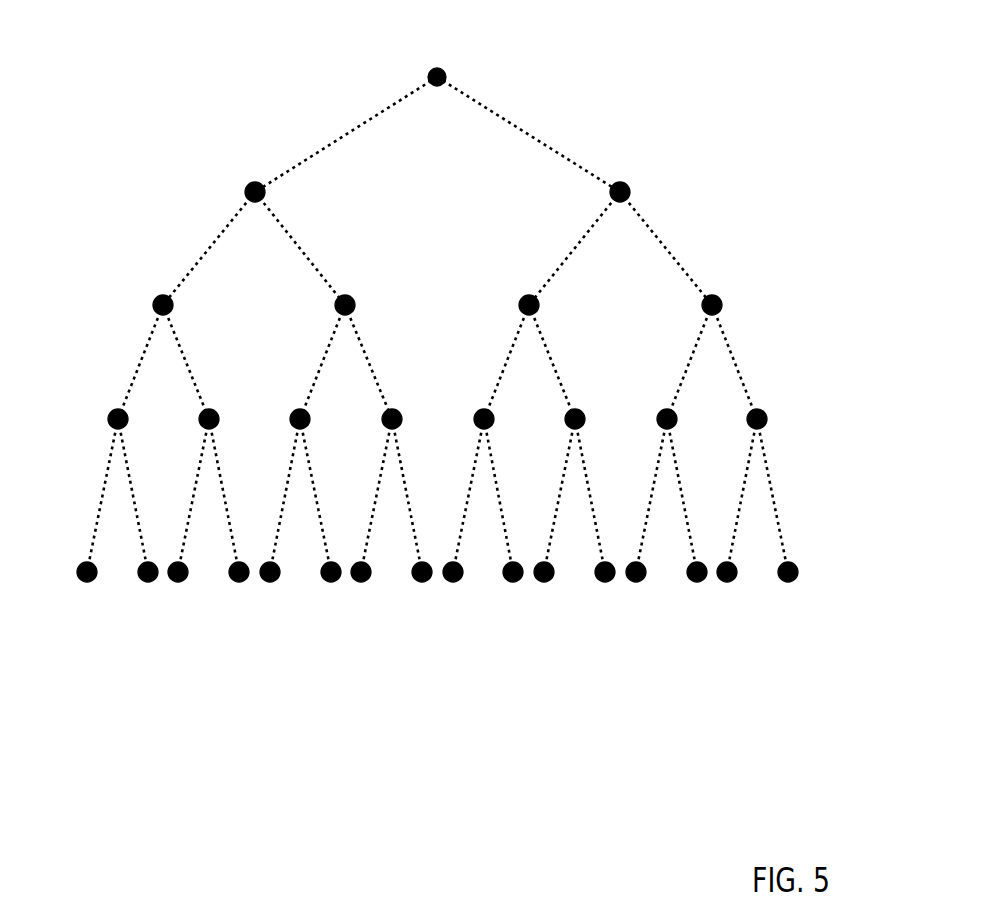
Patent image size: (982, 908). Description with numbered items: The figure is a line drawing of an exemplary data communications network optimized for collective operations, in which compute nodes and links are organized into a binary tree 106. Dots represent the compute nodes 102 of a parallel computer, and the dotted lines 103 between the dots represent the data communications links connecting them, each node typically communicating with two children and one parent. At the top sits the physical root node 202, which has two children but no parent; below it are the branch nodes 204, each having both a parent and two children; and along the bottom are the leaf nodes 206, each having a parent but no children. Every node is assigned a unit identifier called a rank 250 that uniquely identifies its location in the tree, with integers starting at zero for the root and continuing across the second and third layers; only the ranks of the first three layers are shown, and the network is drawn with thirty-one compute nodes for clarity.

The compute nodes 102 is at (497, 411).
The dotted lines 103 is at (355, 127).
The data communications network optimized for collective operations 106 is at (473, 416).
The physical root node 202 is at (470, 62).
The branch nodes 204 is at (810, 140).
The leaf nodes 206 is at (513, 580).
The rank 250 is at (567, 205).